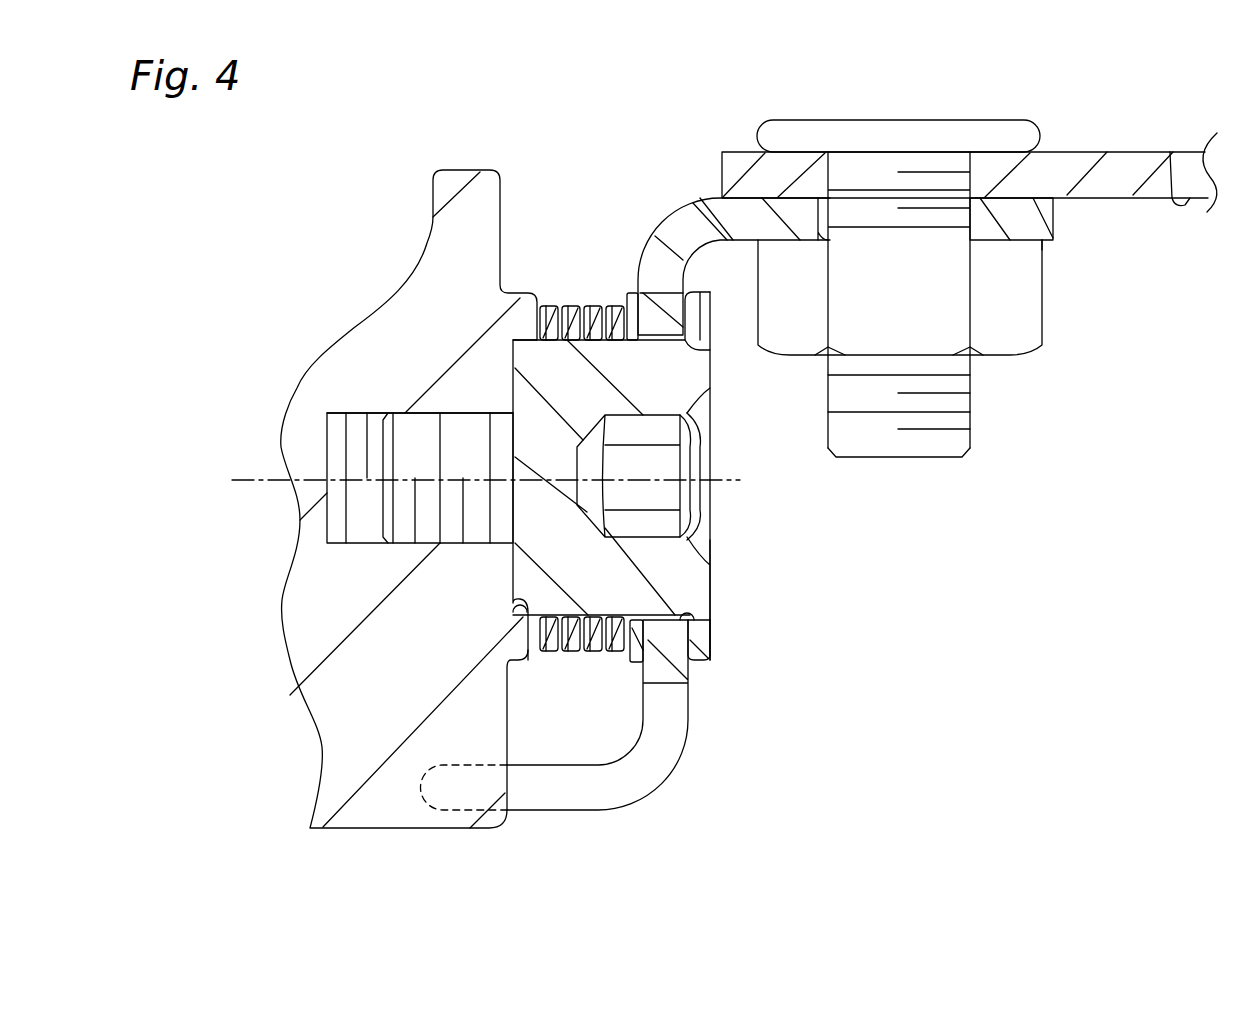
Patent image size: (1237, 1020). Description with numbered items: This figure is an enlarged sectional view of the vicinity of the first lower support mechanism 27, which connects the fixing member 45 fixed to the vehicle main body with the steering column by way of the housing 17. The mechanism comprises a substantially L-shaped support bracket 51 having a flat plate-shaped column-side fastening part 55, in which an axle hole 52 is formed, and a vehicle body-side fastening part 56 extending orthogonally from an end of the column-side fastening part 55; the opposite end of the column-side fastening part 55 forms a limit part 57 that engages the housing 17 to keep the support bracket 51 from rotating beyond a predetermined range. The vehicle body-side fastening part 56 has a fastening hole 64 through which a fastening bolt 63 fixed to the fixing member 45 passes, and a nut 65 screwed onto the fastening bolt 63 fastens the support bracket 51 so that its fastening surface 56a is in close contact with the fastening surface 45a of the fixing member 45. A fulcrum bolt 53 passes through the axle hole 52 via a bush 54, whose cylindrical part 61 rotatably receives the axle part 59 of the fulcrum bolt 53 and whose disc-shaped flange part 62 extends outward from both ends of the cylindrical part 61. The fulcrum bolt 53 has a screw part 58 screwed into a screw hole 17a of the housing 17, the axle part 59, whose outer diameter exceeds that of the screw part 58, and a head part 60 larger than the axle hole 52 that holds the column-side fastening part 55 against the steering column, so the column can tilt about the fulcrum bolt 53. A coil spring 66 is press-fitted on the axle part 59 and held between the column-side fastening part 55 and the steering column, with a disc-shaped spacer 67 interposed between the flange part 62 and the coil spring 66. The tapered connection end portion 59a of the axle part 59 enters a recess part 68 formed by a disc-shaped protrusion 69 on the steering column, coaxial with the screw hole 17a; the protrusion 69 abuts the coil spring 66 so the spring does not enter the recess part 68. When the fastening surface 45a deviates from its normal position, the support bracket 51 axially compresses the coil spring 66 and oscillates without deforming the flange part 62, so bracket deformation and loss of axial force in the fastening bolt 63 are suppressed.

The housing 17 is at (452, 170).
The screw hole 17a is at (357, 421).
The first lower support mechanism 27 is at (867, 673).
The fixing member 45 is at (1111, 154).
The fastening surface 45a is at (1172, 196).
The support bracket 51 is at (690, 200).
The axle hole 52 is at (696, 351).
The fulcrum bolt 53 is at (710, 420).
The bush 54 is at (638, 292).
The column-side fastening part 55 is at (667, 680).
The vehicle body-side fastening part 56 is at (1053, 230).
The fastening surface 56a is at (1014, 200).
The limit part 57 is at (445, 812).
The screw part 58 is at (452, 543).
The axle part 59 is at (591, 652).
The connection end portion 59a is at (517, 393).
The head part 60 is at (702, 570).
The cylindrical part 61 is at (679, 614).
The flange part 62 is at (631, 664).
The fastening bolt 63 is at (895, 120).
The fastening hole 64 is at (822, 242).
The nut 65 is at (1009, 352).
The coil spring 66 is at (547, 305).
The spacer 67 is at (630, 292).
The recess part 68 is at (514, 608).
The protrusion 69 is at (527, 662).